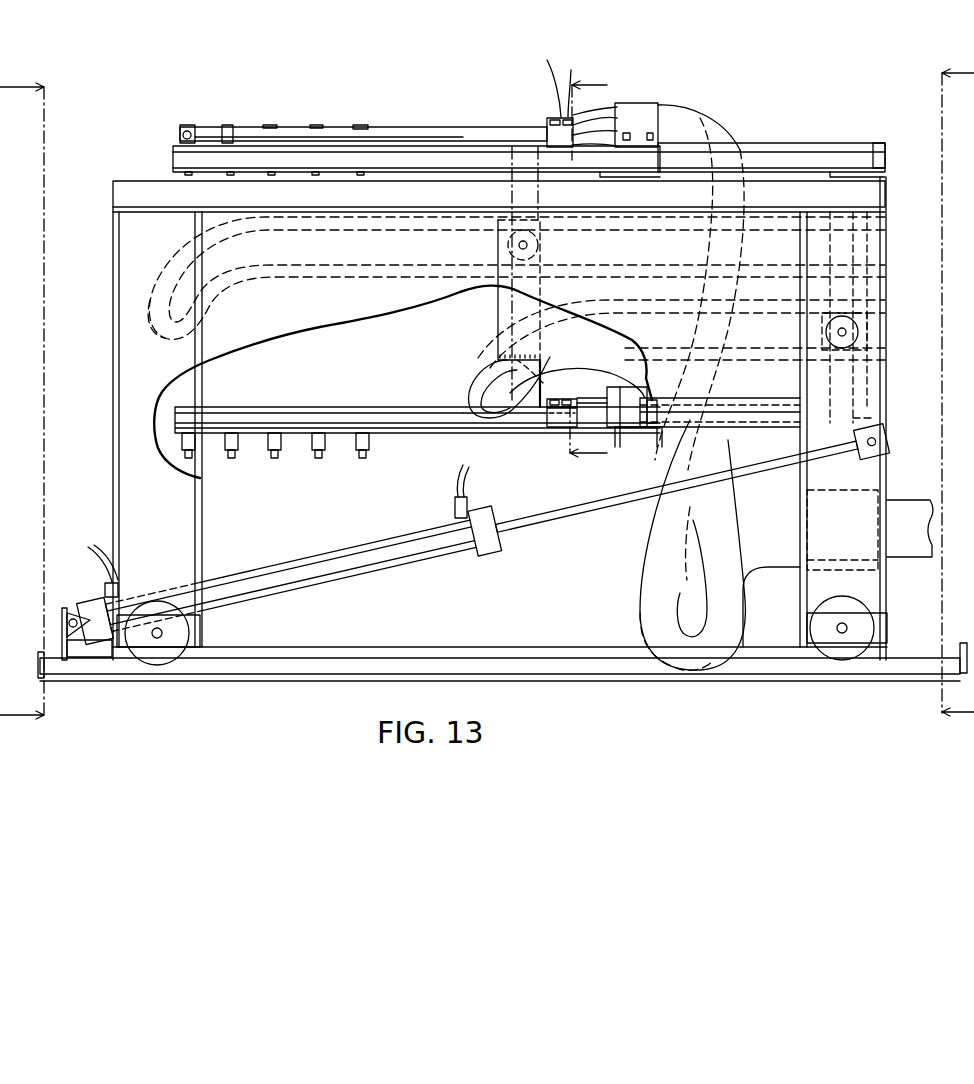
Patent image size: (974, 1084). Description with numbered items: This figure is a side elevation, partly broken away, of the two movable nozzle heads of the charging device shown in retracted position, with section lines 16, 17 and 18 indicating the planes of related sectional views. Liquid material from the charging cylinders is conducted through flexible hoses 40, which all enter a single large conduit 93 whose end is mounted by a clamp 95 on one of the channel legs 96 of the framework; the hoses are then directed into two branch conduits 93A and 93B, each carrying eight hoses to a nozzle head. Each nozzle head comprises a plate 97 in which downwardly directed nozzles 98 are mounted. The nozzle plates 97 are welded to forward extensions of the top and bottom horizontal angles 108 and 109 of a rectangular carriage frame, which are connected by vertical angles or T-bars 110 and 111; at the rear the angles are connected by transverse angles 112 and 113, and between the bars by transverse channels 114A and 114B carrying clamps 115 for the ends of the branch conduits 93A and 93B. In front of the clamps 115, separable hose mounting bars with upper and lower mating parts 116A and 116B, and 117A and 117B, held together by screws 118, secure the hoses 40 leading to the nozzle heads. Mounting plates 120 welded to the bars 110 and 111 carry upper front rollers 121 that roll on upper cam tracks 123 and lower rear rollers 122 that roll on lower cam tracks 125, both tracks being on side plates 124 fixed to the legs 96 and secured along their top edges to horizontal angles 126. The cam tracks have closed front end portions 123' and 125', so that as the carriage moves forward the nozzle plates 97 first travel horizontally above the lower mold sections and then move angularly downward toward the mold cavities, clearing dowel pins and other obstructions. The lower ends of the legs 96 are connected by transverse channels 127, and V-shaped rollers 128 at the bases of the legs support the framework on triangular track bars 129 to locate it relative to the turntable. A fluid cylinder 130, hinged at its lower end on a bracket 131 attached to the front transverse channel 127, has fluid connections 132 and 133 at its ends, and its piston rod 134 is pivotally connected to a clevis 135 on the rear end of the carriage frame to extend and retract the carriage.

The section line 16- 16 is at (601, 278).
The section line 17- 17 is at (37, 404).
The section line 18- 18 is at (940, 399).
The flexible hoses 40 is at (458, 130).
The conduit 93 is at (897, 543).
The branch conduit 93A is at (707, 120).
The branch conduit 93B is at (723, 458).
The clamp 95 is at (857, 488).
The legs 96 is at (199, 553).
The nozzle plate 97 is at (173, 148).
The nozzles 98 is at (183, 126).
The top horizontal angle 108 is at (777, 150).
The bottom horizontal angle 109 is at (527, 413).
The vertical angle or T-bar 110 is at (522, 368).
The vertical angle or T-bar 111 is at (873, 170).
The transverse angle 112 is at (887, 157).
The transverse angle 113 is at (885, 412).
The transverse channel 114A is at (611, 153).
The transverse channel 114B is at (658, 449).
The clamps 115 is at (652, 103).
The upper mating part of hose mounting bar 116A is at (532, 83).
The lower mating part of hose mounting bar 116B is at (553, 142).
The upper mating part of hose mounting bar 117A is at (549, 398).
The lower mating part of hose mounting bar 117B is at (560, 437).
The screws 118 is at (579, 83).
The mounting plates 120 is at (503, 330).
The upper front rollers 121 is at (540, 244).
The lower rear rollers 122 is at (835, 340).
The upper cam tracks 123 is at (517, 278).
The closed front end portion of upper cam track 123' is at (157, 335).
The side plates 124 is at (175, 395).
The lower cam tracks 125 is at (681, 325).
The closed front end portion of lower cam track 125' is at (472, 387).
The horizontal angles 126 is at (115, 196).
The transverse channels 127 is at (193, 660).
The V-shaped rollers 128 is at (160, 603).
The triangular track bars 129 is at (333, 665).
The fluid cylinder 130 is at (263, 583).
The bracket 131 is at (68, 610).
The fluid connection 132 is at (98, 540).
The fluid connection 133 is at (455, 483).
The piston rod 134 is at (517, 527).
The clevis 135 is at (882, 437).